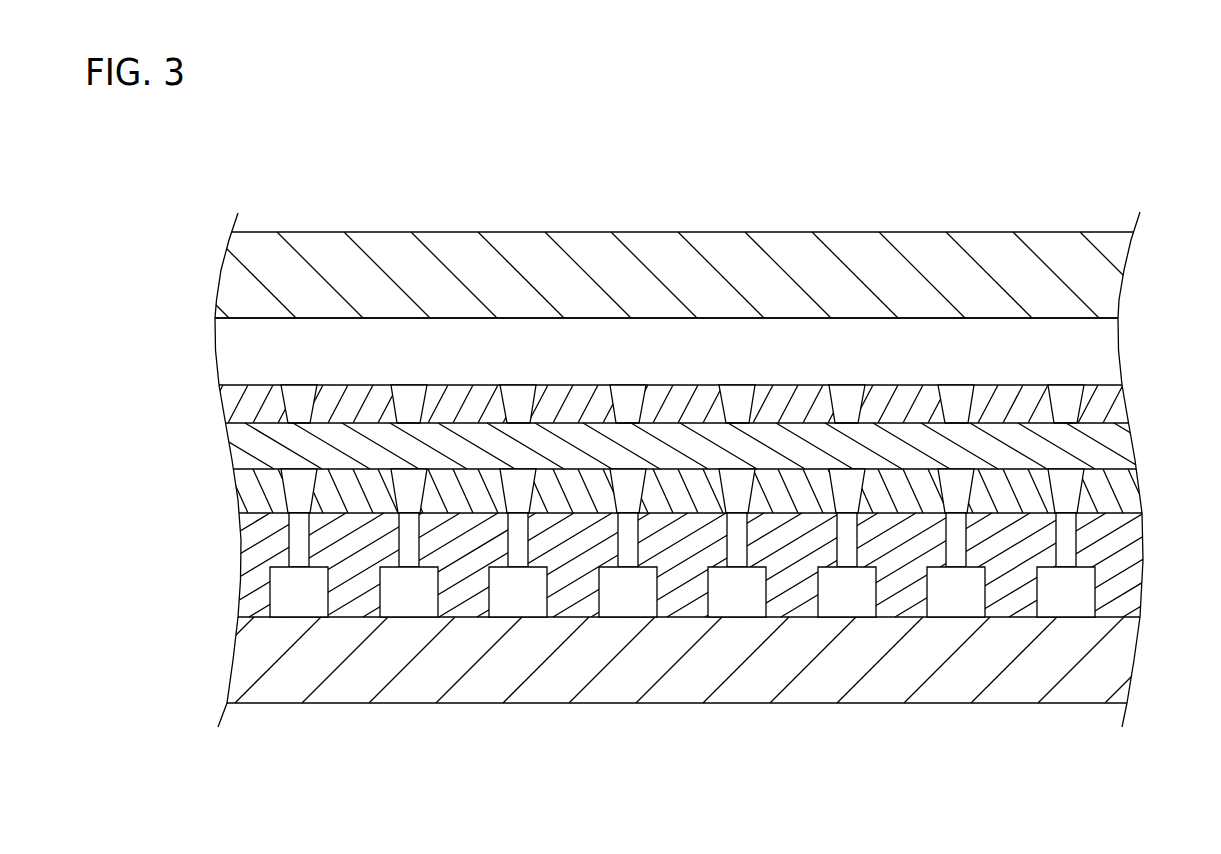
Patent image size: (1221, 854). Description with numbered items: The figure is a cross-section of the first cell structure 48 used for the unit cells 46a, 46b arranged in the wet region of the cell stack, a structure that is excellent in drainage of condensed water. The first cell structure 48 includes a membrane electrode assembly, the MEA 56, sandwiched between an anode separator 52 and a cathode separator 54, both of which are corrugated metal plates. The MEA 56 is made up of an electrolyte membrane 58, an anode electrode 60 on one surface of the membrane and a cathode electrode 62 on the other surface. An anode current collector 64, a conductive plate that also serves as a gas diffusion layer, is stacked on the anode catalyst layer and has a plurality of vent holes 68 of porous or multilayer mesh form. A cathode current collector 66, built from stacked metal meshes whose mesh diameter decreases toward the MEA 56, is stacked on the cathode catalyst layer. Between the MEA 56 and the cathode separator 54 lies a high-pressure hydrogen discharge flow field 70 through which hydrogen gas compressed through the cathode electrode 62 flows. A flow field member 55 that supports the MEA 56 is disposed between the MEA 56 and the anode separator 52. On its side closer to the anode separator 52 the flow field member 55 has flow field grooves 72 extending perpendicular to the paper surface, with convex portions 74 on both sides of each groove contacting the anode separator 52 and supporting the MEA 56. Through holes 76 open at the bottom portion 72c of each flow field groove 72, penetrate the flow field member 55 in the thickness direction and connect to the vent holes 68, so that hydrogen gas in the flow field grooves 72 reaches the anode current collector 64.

The first cell structure 48 is at (297, 210).
The unit cell 46a is at (205, 157).
The unit cell 46b is at (255, 157).
The anode separator 52 is at (1123, 663).
The cathode separator 54 is at (1103, 283).
The flow field member 55 is at (659, 630).
The membrane electrode assembly 56 is at (663, 426).
The electrolyte membrane 58 is at (247, 447).
The anode electrode 60 is at (655, 426).
The cathode electrode 62 is at (238, 405).
The anode current collector 64 is at (679, 426).
The cathode current collector 66 is at (679, 403).
The vent hole 68 is at (1067, 477).
The high-pressure hydrogen discharge flow field 70 is at (655, 367).
The flow field groove 72 is at (744, 657).
The bottom portion 72c is at (1083, 567).
The convex portion 74 is at (1128, 603).
The through hole 76 is at (1077, 535).